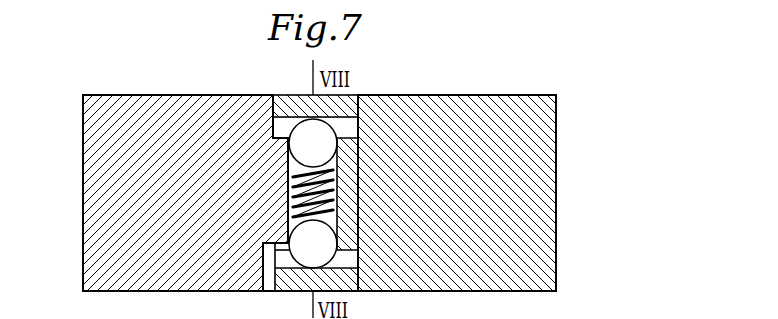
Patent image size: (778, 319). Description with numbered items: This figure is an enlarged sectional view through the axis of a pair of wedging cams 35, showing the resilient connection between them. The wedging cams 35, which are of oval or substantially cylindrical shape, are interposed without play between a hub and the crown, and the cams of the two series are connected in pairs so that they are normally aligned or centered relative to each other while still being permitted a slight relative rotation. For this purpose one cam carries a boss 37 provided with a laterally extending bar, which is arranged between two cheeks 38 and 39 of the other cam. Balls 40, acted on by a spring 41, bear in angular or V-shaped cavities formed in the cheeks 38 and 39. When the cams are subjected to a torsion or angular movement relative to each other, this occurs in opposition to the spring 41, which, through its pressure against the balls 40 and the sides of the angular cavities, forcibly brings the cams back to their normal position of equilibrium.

The wedging cam 35 is at (133, 185).
The boss 37 is at (285, 196).
The cheek 38 is at (338, 108).
The cheek 39 is at (350, 282).
The ball 40 is at (310, 142).
The spring 41 is at (288, 165).